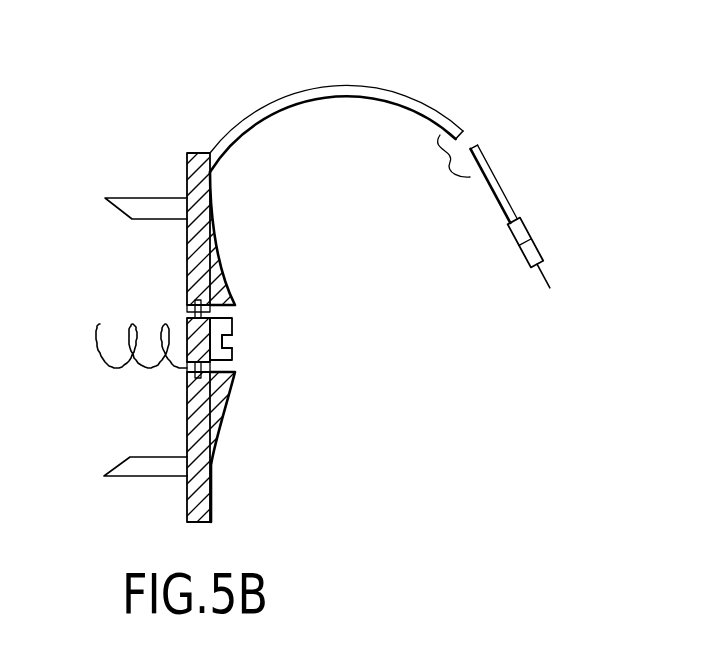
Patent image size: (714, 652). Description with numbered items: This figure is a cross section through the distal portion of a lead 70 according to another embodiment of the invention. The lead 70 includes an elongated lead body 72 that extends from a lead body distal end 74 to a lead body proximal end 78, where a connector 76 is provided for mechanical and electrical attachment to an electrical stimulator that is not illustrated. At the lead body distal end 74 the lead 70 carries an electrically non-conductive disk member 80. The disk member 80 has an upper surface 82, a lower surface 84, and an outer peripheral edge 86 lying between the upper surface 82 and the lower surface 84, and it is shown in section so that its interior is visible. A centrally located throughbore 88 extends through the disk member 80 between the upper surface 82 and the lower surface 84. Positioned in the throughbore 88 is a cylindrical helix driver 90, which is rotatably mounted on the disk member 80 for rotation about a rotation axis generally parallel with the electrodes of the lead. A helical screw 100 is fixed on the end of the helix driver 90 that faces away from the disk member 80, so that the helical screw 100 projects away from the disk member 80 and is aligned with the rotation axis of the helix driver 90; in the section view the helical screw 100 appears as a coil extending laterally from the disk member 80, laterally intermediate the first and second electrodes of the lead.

The lead 70 is at (347, 106).
The elongated lead body 72 is at (357, 97).
The lead body distal end 74 is at (160, 500).
The connector 76 is at (551, 221).
The lead body proximal end 78 is at (503, 259).
The electrically non-conductive disk member 80 is at (201, 338).
The upper surface 82 is at (218, 262).
The lower surface 84 is at (190, 398).
The outer peripheral edge 86 is at (193, 152).
The throughbore 88 is at (236, 306).
The helix driver 90 is at (245, 356).
The helical screw 100 is at (100, 325).